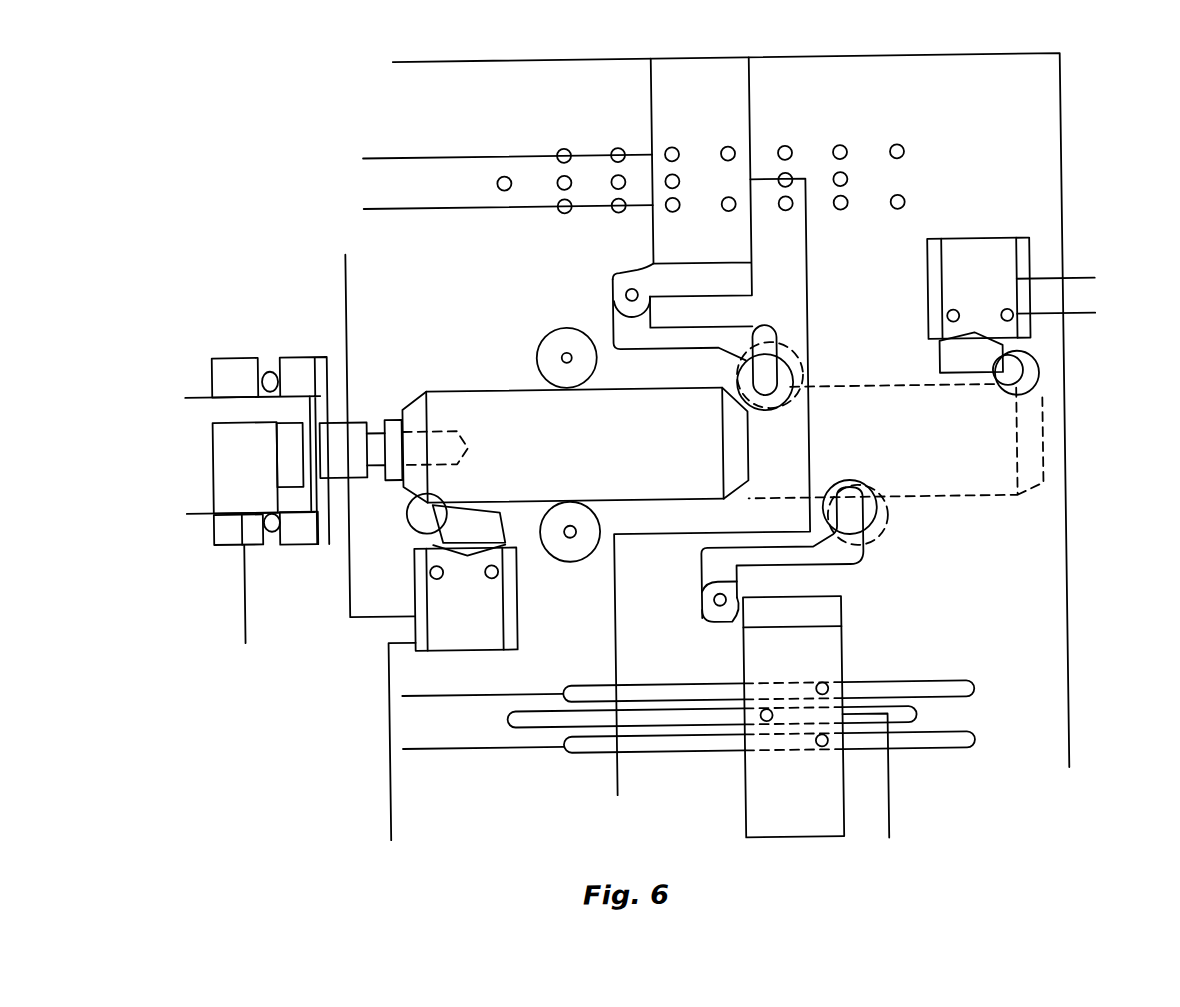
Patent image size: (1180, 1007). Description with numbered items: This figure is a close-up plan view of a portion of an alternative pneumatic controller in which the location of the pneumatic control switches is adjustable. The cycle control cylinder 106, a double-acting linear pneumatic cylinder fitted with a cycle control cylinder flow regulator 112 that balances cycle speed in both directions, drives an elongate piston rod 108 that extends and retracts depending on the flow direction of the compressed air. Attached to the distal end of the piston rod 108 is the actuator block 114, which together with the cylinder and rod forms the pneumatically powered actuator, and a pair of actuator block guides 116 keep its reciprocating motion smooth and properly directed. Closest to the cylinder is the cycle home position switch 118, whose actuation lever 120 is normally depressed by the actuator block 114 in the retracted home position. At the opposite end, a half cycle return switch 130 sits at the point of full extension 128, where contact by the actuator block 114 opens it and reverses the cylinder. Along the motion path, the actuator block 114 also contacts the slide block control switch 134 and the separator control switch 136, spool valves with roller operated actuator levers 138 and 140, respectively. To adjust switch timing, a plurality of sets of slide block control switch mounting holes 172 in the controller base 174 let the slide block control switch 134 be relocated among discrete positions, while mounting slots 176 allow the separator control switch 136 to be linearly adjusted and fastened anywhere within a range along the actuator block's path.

The cycle control cylinder 106 is at (193, 405).
The piston rod 108 is at (375, 438).
The cycle control cylinder flow regulator 112 is at (252, 437).
The actuator block 114 is at (590, 457).
The actuator block guides 116 is at (551, 328).
The cycle home position switch 118 is at (484, 630).
The actuation lever 120 is at (426, 513).
The point of full extension 128 is at (1043, 487).
The half cycle return switch 130 is at (997, 286).
The slide block control switch 134 is at (724, 115).
The separator control switch 136 is at (811, 666).
The roller operated actuator lever 138 is at (744, 333).
The roller operated actuator lever 140 is at (832, 557).
The slide block control switch mounting holes 172 is at (915, 143).
The controller base 174 is at (1066, 189).
The mounting slots 176 is at (989, 677).